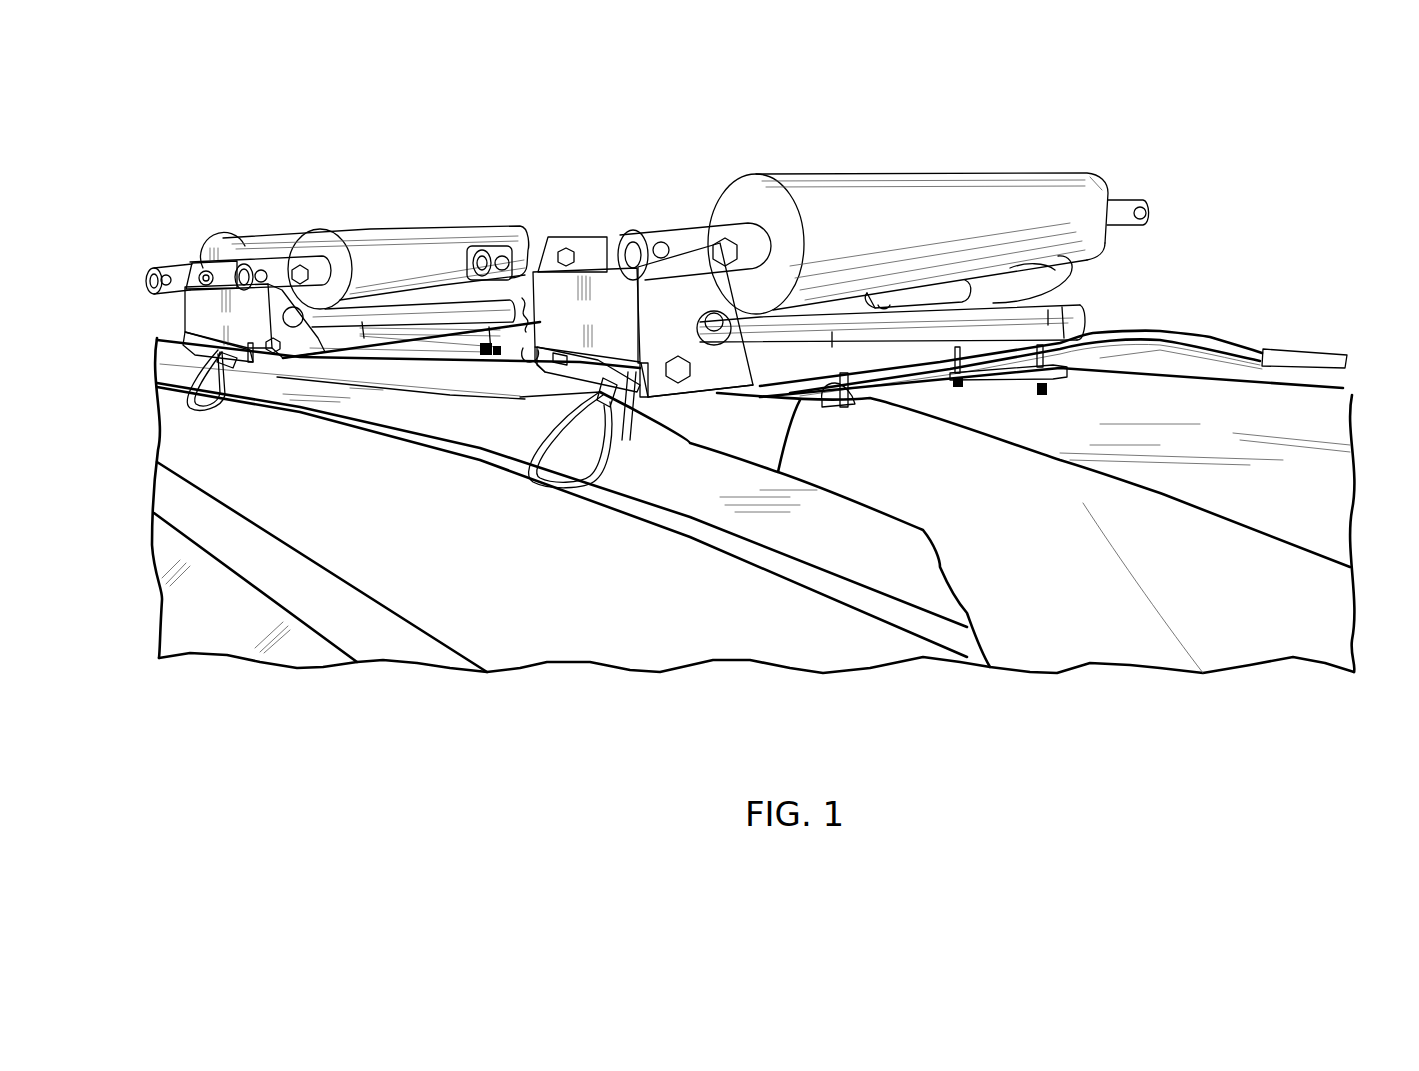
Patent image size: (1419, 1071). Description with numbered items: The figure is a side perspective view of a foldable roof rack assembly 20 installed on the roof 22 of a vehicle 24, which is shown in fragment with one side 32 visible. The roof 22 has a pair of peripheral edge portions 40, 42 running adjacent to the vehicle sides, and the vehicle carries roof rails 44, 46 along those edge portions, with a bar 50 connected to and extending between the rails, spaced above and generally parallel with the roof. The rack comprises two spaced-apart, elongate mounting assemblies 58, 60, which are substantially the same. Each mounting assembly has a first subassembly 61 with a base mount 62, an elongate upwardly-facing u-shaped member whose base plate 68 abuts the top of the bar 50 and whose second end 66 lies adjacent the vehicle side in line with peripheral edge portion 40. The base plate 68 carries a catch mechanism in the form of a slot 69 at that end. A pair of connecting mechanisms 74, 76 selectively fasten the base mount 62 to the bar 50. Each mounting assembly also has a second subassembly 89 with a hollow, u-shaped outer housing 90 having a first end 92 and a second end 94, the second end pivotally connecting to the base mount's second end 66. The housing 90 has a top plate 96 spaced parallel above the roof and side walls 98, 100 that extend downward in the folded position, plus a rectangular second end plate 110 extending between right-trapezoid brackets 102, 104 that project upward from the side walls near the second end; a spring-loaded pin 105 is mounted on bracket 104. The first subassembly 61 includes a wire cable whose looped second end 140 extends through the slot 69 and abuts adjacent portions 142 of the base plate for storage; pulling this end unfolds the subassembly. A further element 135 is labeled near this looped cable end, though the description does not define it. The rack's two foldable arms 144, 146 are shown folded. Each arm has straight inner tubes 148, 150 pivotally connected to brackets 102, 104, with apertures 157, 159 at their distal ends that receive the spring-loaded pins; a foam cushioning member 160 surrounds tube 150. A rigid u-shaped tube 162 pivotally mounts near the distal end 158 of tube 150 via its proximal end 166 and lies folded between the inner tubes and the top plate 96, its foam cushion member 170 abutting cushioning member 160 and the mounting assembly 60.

The foldable roof rack assembly 20 is at (1136, 157).
The roof 22 is at (1153, 418).
The vehicle 24 is at (1247, 395).
The side 32 is at (240, 618).
The peripheral edge portion 40 is at (817, 643).
The peripheral edge portion 42 is at (1327, 405).
The roof rail 44 is at (437, 380).
The roof rail 46 is at (1326, 355).
The bar 50 is at (1192, 340).
The mounting assembly 58 is at (309, 367).
The mounting assembly 60 is at (718, 402).
The first subassembly 61 is at (660, 390).
The base mount 62 is at (547, 372).
The second end 66 is at (677, 318).
The base plate 68 is at (637, 423).
The slot 69 is at (597, 378).
The connecting mechanism 74 is at (868, 393).
The connecting mechanism 76 is at (1026, 401).
The second subassembly 89 is at (795, 400).
The outer housing 90 is at (971, 381).
The first end 92 is at (1083, 316).
The second end 94 is at (527, 330).
The top plate 96 is at (833, 315).
The side wall 98 is at (535, 362).
The side wall 100 is at (973, 383).
The bracket 102 is at (548, 236).
The bracket 104 is at (710, 302).
The spring-loaded pin 105 is at (730, 342).
The second end plate 110 is at (605, 314).
The cable loop 135 is at (537, 491).
The second end 140 is at (560, 487).
The adjacent portions 142 is at (598, 418).
The foldable arm 144 is at (270, 236).
The foldable arm 146 is at (933, 163).
The tube 148 is at (600, 248).
The tube 150 is at (688, 242).
The aperture 157 is at (493, 248).
The distal end 158 is at (1147, 205).
The aperture 159 is at (657, 242).
The cushioning member 160 is at (1053, 195).
The u-shaped tube 162 is at (947, 290).
The proximal end 166 is at (880, 293).
The cushion member 170 is at (1063, 270).